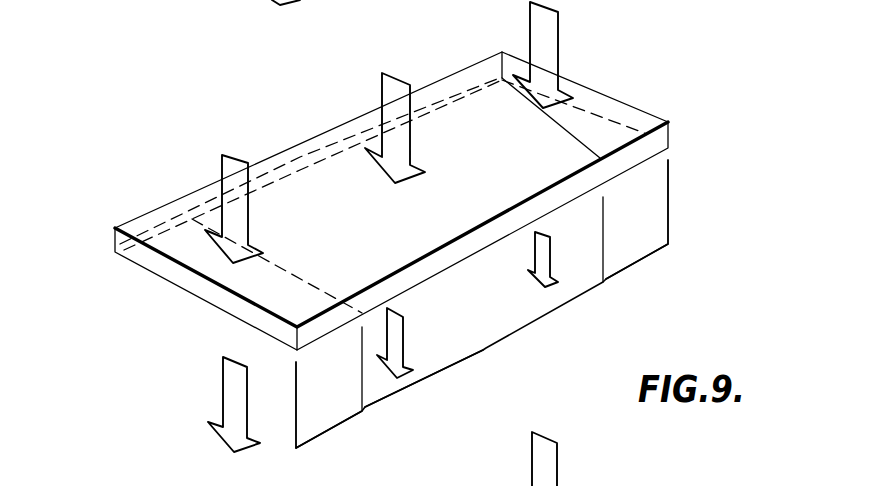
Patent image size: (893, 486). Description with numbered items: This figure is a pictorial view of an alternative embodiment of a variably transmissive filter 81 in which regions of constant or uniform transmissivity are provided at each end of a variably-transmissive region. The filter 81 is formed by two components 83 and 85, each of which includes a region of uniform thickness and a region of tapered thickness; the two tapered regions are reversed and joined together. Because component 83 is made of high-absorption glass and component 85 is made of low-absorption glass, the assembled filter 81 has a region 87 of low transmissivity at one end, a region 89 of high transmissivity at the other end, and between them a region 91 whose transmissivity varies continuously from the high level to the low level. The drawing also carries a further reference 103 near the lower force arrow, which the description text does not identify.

The filter 81 is at (102, 312).
The component 83 is at (668, 130).
The component 85 is at (116, 241).
The region of low transmissivity 87 is at (328, 436).
The region of high transmissivity 89 is at (641, 269).
The region of variable transmissivity 91 is at (483, 351).
The applied force arrow 103 is at (601, 459).